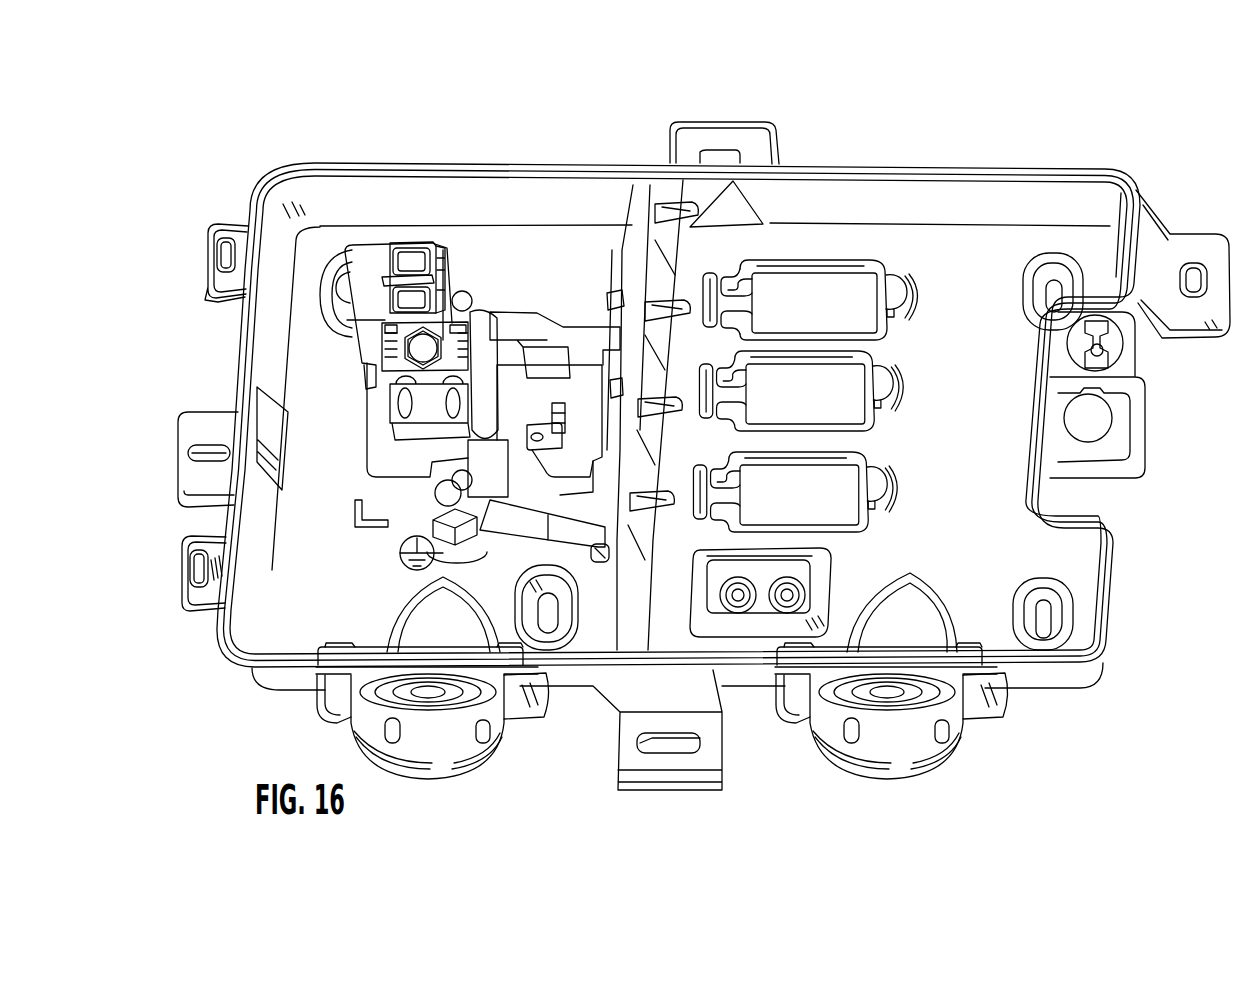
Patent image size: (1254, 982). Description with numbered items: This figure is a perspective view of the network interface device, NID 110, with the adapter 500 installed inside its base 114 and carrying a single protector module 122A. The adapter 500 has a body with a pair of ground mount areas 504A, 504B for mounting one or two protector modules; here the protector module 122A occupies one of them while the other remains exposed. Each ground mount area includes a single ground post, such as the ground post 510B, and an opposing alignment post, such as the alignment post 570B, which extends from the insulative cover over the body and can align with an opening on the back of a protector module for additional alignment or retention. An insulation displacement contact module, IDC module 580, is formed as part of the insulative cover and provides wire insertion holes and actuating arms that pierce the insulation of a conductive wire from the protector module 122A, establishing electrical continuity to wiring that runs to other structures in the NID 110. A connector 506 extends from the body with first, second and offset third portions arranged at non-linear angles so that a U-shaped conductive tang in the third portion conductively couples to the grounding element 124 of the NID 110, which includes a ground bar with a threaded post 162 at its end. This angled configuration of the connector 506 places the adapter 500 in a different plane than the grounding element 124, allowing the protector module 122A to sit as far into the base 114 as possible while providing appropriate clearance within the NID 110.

The network interface device (NID) 110 is at (833, 163).
The base 114 is at (992, 262).
The adapter 500 is at (391, 440).
The insulation displacement contact (IDC) module 580 is at (373, 247).
The protector module 122A is at (425, 343).
The ground mount area 504A is at (395, 447).
The alignment post 570B is at (531, 368).
The ground mount area 504B is at (543, 389).
The ground post 510B is at (539, 442).
The connector 506 is at (503, 497).
The threaded post 162 is at (437, 500).
The grounding element 124 is at (400, 557).